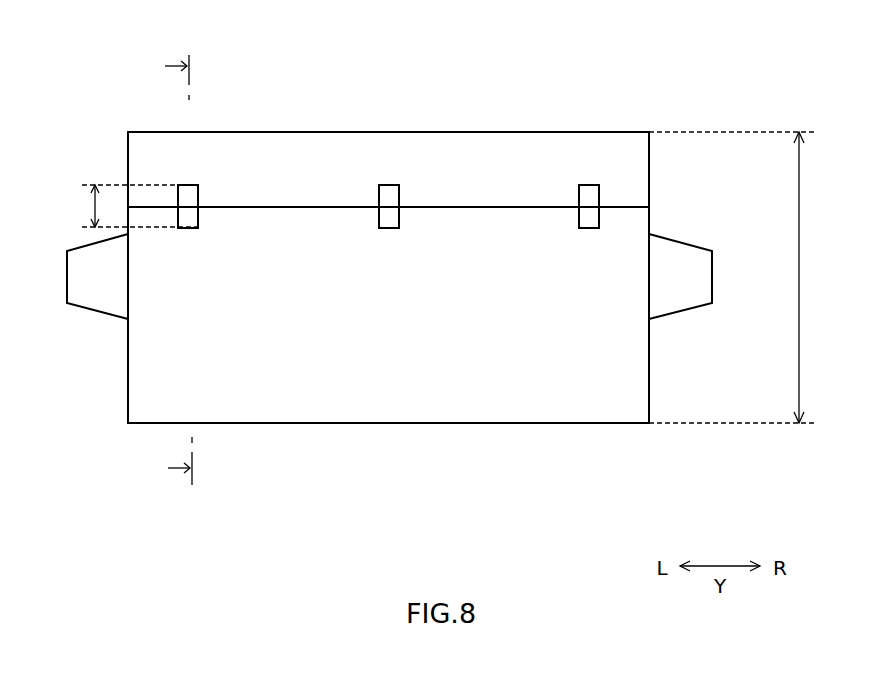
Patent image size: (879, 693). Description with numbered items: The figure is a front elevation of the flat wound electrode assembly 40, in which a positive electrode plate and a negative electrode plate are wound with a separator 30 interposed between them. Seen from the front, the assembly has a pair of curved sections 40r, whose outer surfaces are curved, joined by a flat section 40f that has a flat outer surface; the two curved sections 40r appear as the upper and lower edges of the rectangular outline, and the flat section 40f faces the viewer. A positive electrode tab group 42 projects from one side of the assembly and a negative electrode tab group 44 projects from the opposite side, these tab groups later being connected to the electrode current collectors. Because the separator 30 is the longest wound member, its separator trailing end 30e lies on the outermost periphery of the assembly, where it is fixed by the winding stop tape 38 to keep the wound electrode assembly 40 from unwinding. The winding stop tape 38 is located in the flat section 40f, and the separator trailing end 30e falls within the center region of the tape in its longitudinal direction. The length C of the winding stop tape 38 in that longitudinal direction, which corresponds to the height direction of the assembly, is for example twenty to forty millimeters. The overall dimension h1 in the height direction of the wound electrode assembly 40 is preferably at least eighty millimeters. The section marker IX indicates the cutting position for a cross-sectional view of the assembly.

The wound electrode assembly 40 is at (92, 44).
The separator 30 is at (468, 378).
The separator trailing end 30e is at (262, 204).
The curved sections 40r is at (585, 132).
The flat section 40f is at (248, 365).
The winding stop tape 38 is at (193, 185).
The positive electrode tab group 42 is at (75, 277).
The negative electrode tab group 44 is at (707, 278).
The length of the winding stop tape C is at (134, 206).
The dimension in the height direction h1 is at (741, 277).
The section line IX is at (166, 270).